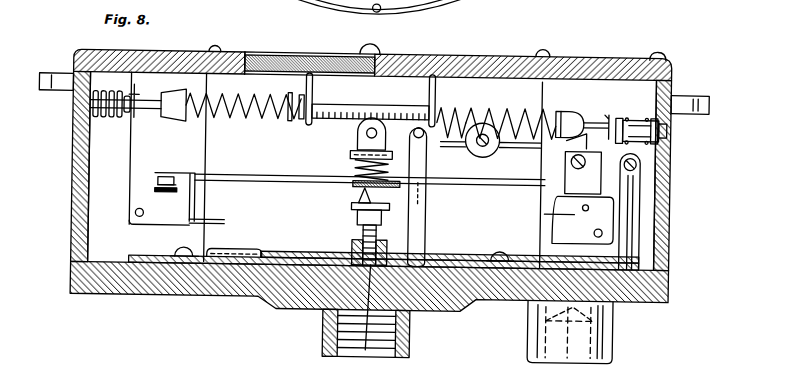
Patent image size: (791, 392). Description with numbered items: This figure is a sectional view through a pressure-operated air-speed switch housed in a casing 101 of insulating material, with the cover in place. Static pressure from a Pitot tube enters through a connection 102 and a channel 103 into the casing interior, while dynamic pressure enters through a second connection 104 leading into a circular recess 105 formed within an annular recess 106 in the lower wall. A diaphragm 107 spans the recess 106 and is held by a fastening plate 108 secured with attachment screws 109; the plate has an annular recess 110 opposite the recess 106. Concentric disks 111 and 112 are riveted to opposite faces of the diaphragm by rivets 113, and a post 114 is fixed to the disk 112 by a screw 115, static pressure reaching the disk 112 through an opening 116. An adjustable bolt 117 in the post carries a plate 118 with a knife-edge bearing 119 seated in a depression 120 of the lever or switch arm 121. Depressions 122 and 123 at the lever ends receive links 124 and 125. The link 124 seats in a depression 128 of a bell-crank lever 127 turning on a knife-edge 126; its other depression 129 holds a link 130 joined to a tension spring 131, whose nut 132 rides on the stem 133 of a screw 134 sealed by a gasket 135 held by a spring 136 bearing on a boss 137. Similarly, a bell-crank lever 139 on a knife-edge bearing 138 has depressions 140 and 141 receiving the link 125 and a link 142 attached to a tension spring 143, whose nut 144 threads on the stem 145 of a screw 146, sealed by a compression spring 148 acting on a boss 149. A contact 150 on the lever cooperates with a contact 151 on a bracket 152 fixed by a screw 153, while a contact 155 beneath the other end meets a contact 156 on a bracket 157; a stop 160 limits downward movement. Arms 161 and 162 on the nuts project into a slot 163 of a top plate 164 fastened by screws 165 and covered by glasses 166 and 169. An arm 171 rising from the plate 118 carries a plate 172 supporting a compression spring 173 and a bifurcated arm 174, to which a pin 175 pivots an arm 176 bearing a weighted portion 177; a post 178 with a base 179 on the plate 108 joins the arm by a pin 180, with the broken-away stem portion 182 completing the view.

The casing 101 is at (664, 243).
The connection 102 is at (612, 340).
The channel 103 is at (603, 312).
The second connection 104 is at (412, 330).
The circular recess 105 is at (335, 300).
The annular recess 106 is at (268, 302).
The diaphragm 107 is at (470, 305).
The fastening plate 108 is at (522, 256).
The attachment screws 109 is at (520, 255).
The annular recess 110 is at (262, 251).
The disk 111 is at (428, 308).
The disk 112 is at (492, 262).
The rivets 113 is at (312, 255).
The post 114 is at (392, 248).
The screw 115 is at (380, 324).
The opening 116 is at (356, 258).
The adjustable bolt 117 is at (358, 222).
The plate 118 is at (352, 206).
The knife-edge bearing 119 is at (358, 195).
The depression 120 is at (355, 170).
The lever or switch arm 121 is at (445, 183).
The depression 122 is at (208, 174).
The depression 123 is at (570, 160).
The link 124 is at (200, 198).
The link 125 is at (546, 190).
The knife-edge 126 is at (146, 218).
The bell-crank lever 127 is at (133, 162).
The depression 128 is at (222, 226).
The depression 129 is at (178, 97).
The link 130 is at (155, 118).
The tension spring 131 is at (214, 104).
The nut 132 is at (286, 103).
The stem 133 is at (304, 127).
The screw 134 is at (660, 113).
The gasket or washer 135 is at (662, 124).
The spring 136 is at (670, 70).
The boss 137 is at (654, 50).
The knife-edge bearing 138 is at (597, 224).
The bell-crank lever 139 is at (575, 237).
The depression 140 is at (552, 208).
The depression 141 is at (606, 108).
The link 142 is at (562, 104).
The tension spring 143 is at (528, 106).
The nut 144 is at (468, 104).
The stem 145 is at (320, 115).
The screw 146 is at (72, 116).
The compression spring 148 is at (108, 100).
The boss 149 is at (136, 106).
The electrical contact 150 is at (618, 192).
The second contact 151 is at (628, 173).
The bracket 152 is at (640, 158).
The screw 153 is at (598, 138).
The second contact 155 is at (158, 186).
The contact 156 is at (158, 193).
The bracket 157 is at (155, 198).
The stop 160 is at (583, 200).
The arm 161 is at (318, 74).
The arm 162 is at (405, 108).
The slot 163 is at (268, 66).
The top plate 164 is at (588, 64).
The screws 165 is at (541, 52).
The glass 166 is at (366, 54).
The glass 169 is at (410, 56).
The arm 171 is at (392, 200).
The plate 172 is at (350, 156).
The compression spring 173 is at (395, 170).
The bifurcated arm 174 is at (368, 106).
The pin 175 is at (357, 136).
The arm 176 is at (500, 128).
The weighted portion 177 is at (500, 144).
The post 178 is at (428, 218).
The base 179 is at (428, 258).
The pin 180 is at (412, 127).
The plunger 182 is at (708, 92).